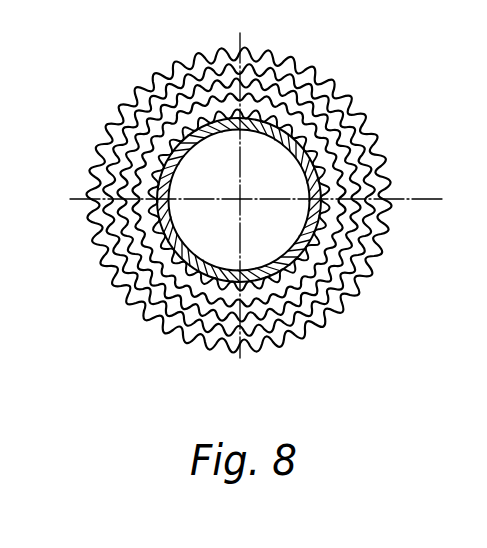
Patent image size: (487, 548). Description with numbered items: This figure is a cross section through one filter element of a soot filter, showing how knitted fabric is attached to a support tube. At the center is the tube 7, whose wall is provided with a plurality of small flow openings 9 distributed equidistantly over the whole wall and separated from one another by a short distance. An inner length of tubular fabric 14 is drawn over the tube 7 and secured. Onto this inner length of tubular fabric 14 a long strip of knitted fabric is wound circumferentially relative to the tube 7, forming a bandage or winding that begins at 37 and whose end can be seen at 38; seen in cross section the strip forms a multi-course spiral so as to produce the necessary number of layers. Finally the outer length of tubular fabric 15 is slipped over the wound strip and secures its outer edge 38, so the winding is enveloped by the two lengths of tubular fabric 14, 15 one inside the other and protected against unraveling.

The beginning of the winding 37 is at (323, 73).
The end of the winding 38 is at (345, 97).
The flow openings 9 is at (383, 143).
The tube 7 is at (385, 180).
The inner length of tubular fabric 14 is at (388, 225).
The outer length of tubular fabric 15 is at (377, 267).